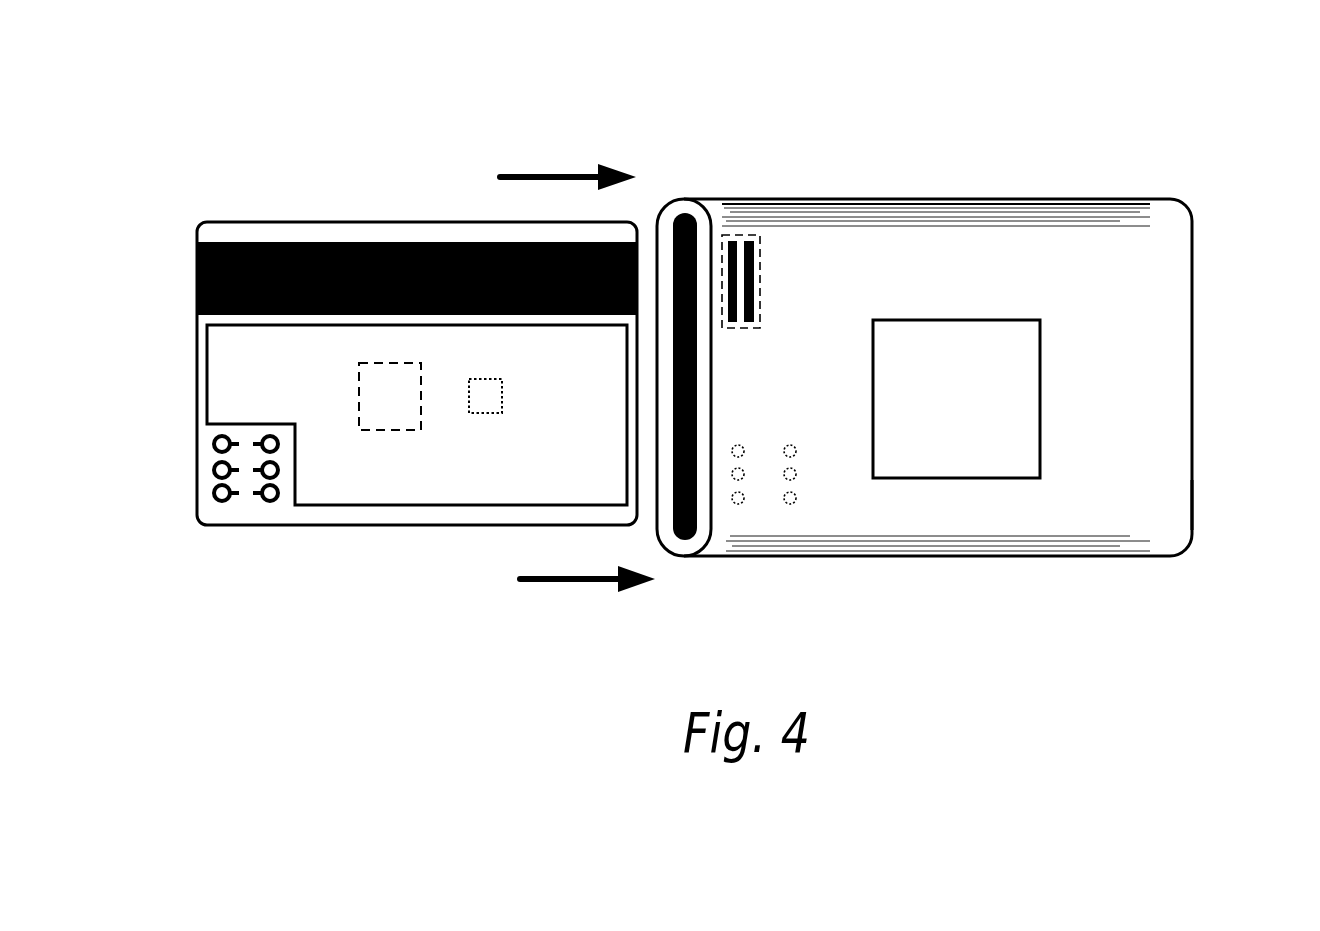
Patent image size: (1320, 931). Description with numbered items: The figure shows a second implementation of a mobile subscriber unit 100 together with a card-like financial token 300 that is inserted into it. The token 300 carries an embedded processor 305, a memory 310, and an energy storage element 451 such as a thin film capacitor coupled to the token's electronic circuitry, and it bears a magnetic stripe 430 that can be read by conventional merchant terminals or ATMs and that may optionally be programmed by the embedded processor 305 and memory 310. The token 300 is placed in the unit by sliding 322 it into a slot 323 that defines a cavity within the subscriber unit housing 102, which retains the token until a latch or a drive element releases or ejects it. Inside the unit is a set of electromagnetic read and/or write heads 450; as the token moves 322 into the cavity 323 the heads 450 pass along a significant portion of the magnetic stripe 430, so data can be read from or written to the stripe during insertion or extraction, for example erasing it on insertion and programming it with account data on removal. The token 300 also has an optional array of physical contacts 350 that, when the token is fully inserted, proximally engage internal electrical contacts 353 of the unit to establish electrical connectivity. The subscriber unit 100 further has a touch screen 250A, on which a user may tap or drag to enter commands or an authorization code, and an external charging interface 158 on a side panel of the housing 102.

The mobile subscriber unit 100 is at (943, 150).
The subscriber unit housing 102 is at (1063, 200).
The external charging interface 158 is at (1215, 507).
The touch screen 250A is at (903, 320).
The financial token 300 is at (383, 222).
The embedded processor 305 is at (400, 363).
The memory 310 is at (487, 379).
The sliding insertion direction 322 is at (568, 172).
The slot 323 is at (683, 213).
The array of physical contacts 350 is at (222, 500).
The internal electrical contacts 353 is at (745, 515).
The magnetic stripe 430 is at (283, 243).
The electromagnetic read and/or write heads 450 is at (742, 235).
The energy storage element 451 is at (538, 505).